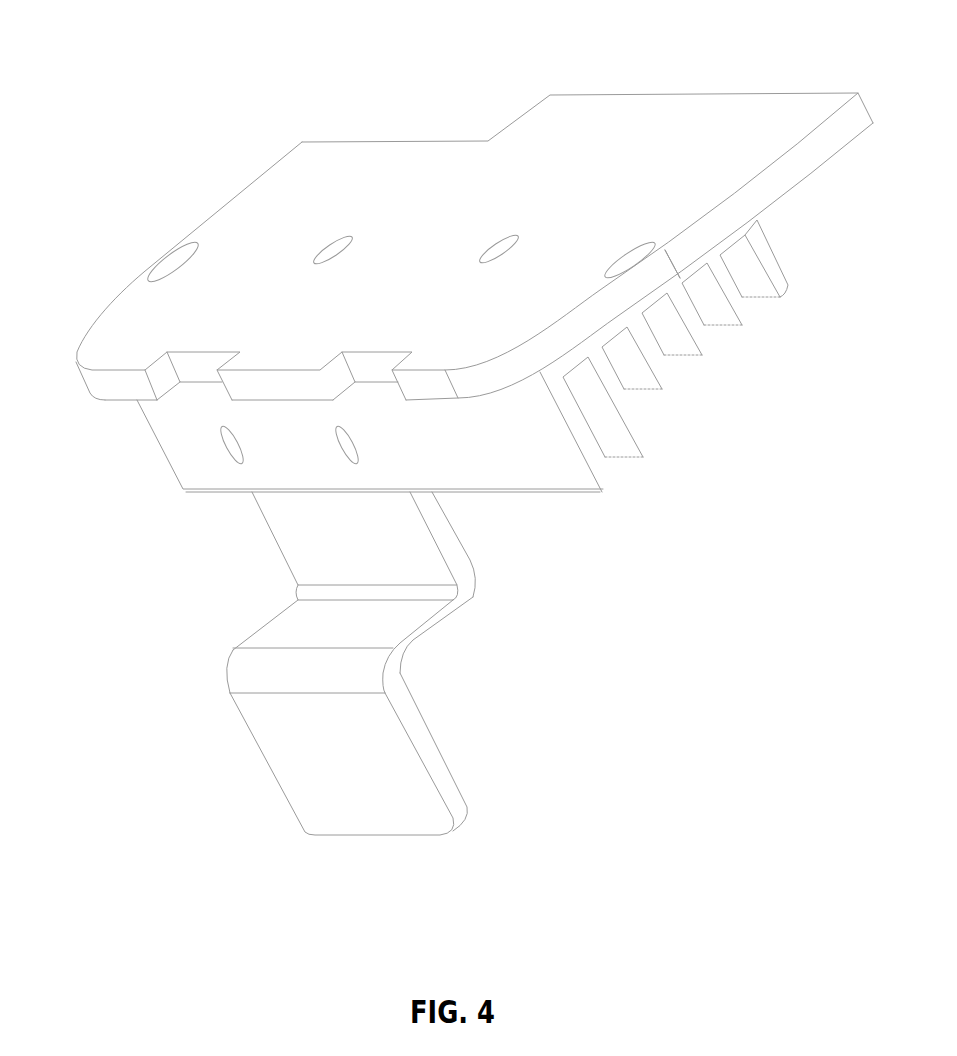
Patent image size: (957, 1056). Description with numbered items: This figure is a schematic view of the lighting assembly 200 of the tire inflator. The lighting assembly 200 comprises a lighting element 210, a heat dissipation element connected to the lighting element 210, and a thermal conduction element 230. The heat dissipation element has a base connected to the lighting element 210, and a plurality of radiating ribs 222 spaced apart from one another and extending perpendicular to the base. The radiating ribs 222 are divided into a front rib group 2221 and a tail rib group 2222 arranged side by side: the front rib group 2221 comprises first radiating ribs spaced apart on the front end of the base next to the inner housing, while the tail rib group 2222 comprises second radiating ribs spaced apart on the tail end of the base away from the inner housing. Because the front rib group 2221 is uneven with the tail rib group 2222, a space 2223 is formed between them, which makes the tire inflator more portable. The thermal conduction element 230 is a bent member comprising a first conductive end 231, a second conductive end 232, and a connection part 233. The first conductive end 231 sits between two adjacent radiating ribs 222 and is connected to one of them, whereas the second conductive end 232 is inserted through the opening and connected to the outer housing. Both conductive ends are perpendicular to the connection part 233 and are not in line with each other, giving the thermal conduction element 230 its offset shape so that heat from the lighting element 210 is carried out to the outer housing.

The lighting assembly 200 is at (74, 161).
The lighting element 210 is at (580, 114).
The radiating rib 222 is at (875, 423).
The front rib group 2221 is at (643, 443).
The tail rib group 2222 is at (743, 315).
The space 2223 is at (684, 365).
The thermal conduction element 230 is at (608, 575).
The first conductive end 231 is at (400, 535).
The second conductive end 232 is at (365, 758).
The connection part 233 is at (385, 618).